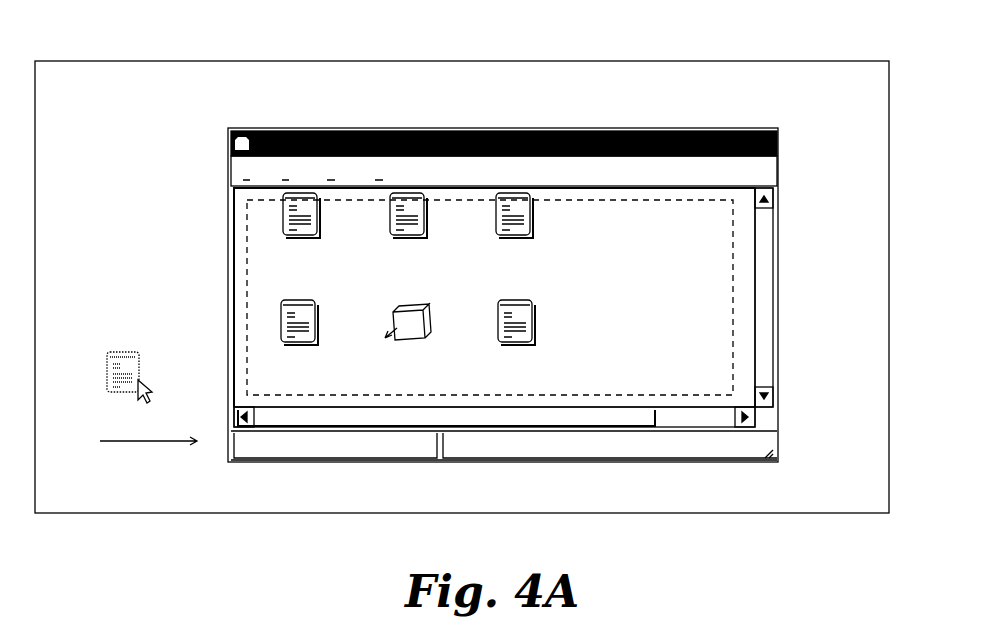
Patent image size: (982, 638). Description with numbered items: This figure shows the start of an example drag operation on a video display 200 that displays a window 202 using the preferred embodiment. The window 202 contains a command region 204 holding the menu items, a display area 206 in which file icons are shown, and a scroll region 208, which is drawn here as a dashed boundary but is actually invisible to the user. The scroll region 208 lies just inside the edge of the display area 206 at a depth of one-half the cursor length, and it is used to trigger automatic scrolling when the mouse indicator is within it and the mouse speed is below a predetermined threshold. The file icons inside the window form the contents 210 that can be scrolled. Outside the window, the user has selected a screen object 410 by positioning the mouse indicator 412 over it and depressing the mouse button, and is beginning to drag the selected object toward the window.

The video display 200 is at (715, 62).
The window 202 is at (501, 269).
The command region 204 is at (222, 167).
The display area 206 is at (713, 243).
The scroll region 208 is at (740, 297).
The contents 210 is at (535, 285).
The screen object 410 is at (110, 355).
The mouse indicator 412 is at (148, 392).